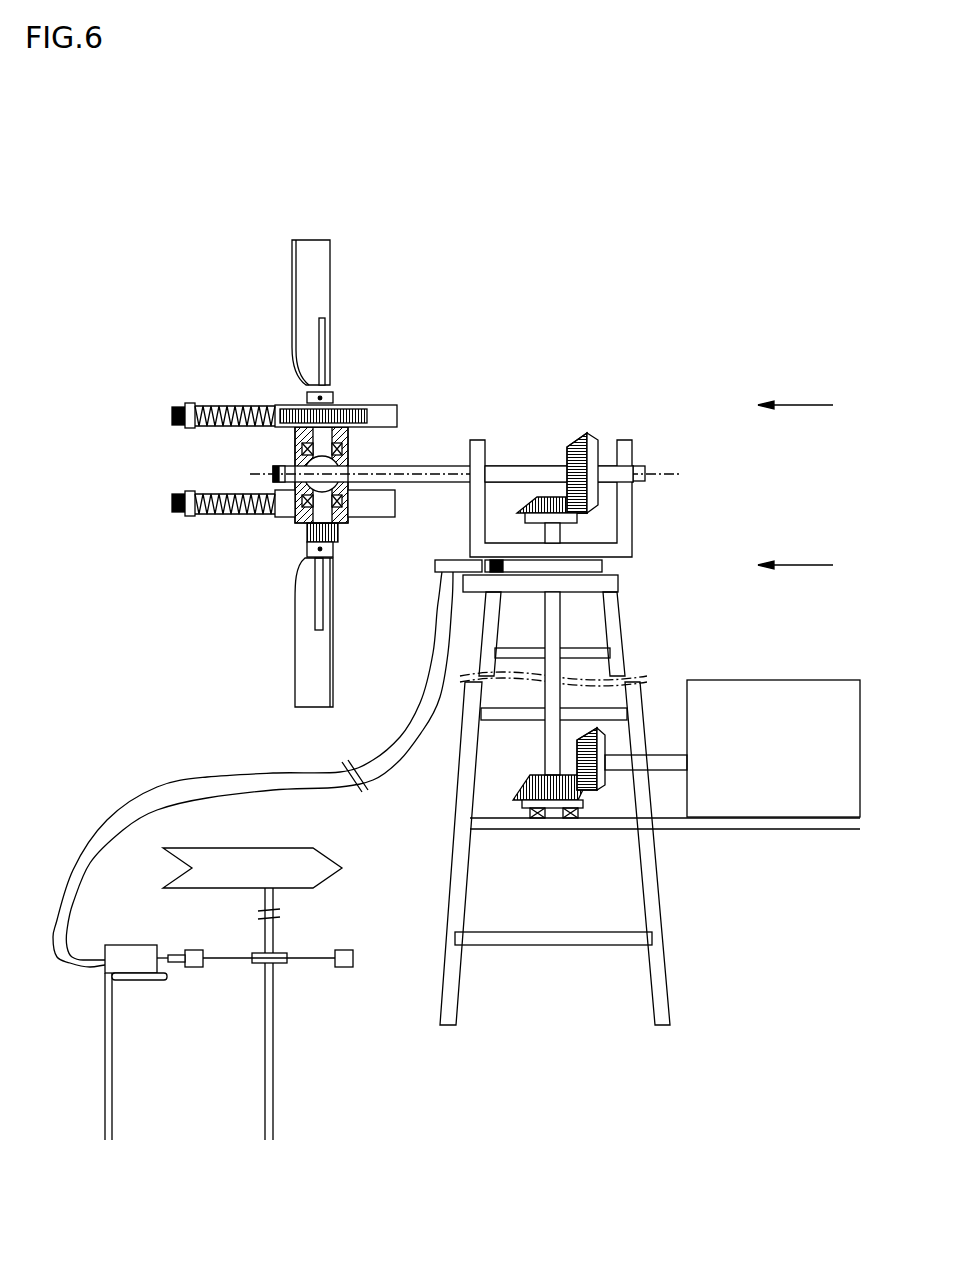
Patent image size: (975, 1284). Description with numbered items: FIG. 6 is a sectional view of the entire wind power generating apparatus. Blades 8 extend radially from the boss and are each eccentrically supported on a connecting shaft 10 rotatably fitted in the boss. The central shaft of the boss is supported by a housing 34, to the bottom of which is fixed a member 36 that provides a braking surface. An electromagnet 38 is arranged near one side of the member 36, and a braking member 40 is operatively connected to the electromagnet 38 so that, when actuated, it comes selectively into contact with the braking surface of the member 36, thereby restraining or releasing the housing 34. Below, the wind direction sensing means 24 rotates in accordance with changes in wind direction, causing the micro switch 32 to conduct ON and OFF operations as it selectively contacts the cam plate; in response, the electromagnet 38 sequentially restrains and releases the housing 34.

The blade 8 is at (322, 263).
The connecting shaft 10 is at (323, 345).
The housing 34 is at (628, 537).
The member providing a braking surface 36 is at (592, 565).
The electromagnet 38 is at (435, 566).
The braking member 40 is at (492, 572).
The micro switch 32 is at (115, 958).
The wind direction sensing means 24 is at (179, 994).